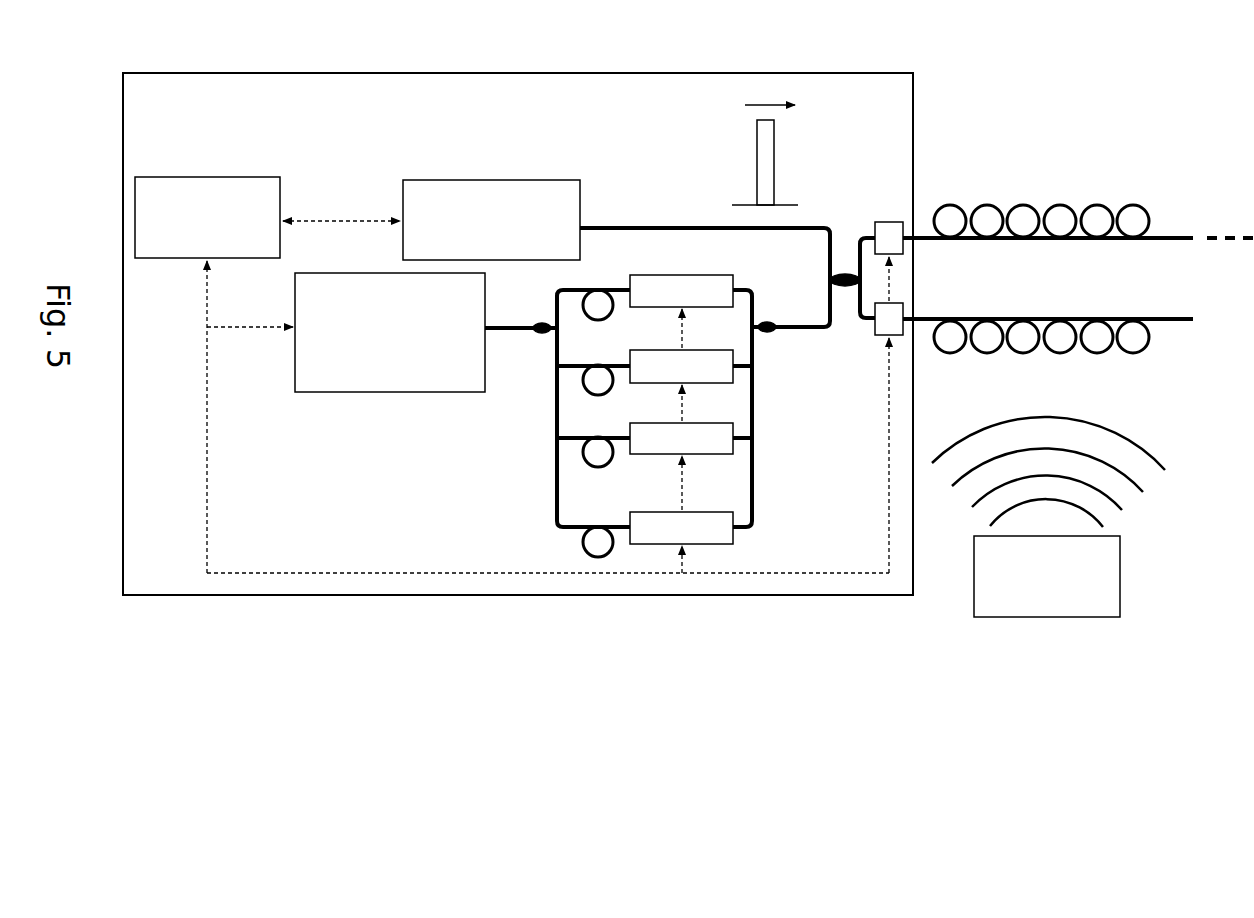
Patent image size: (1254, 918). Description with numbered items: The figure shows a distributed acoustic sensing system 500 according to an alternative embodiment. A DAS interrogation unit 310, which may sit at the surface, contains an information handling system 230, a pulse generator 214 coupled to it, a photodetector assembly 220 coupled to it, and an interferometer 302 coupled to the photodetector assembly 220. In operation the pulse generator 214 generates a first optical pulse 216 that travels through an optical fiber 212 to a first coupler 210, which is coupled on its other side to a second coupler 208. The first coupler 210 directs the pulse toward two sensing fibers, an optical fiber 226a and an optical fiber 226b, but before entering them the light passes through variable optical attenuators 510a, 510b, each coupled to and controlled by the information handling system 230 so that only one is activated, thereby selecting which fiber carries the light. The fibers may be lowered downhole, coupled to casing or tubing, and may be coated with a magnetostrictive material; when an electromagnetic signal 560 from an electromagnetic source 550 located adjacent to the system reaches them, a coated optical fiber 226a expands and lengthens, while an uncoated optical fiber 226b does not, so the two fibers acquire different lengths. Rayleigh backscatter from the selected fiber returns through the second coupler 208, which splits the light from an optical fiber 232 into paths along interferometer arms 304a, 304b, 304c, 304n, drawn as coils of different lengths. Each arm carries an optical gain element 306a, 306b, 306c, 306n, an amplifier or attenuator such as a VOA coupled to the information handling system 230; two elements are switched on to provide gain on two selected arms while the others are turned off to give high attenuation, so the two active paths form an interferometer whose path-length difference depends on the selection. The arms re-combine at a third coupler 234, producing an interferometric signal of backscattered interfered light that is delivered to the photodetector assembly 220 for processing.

The distributed acoustic sensing system 500 is at (1097, 70).
The DAS interrogation unit 310 is at (821, 600).
The information handling system 230 is at (207, 177).
The pulse generator 214 is at (487, 180).
The photodetector assembly 220 is at (385, 392).
The first optical pulse 216 is at (757, 148).
The optical fiber 212 is at (806, 226).
The first coupler 210 is at (847, 273).
The optical fiber 232 is at (832, 322).
The third coupler 234 is at (539, 324).
The second coupler 208 is at (770, 333).
The interferometer 302 is at (548, 421).
The interferometer arm 304a is at (587, 318).
The interferometer arm 304b is at (587, 391).
The interferometer arm 304c is at (586, 461).
The interferometer arm 304n is at (586, 551).
The optical gain element 306a is at (681, 291).
The optical gain element 306b is at (681, 366).
The optical gain element 306c is at (681, 438).
The optical gain element 306n is at (681, 528).
The variable optical attenuator 510a is at (903, 243).
The variable optical attenuator 510b is at (907, 303).
The optical fiber 226a is at (1163, 235).
The optical fiber 226b is at (1163, 317).
The electromagnetic signal 560 is at (1143, 452).
The electromagnetic source 550 is at (1120, 574).